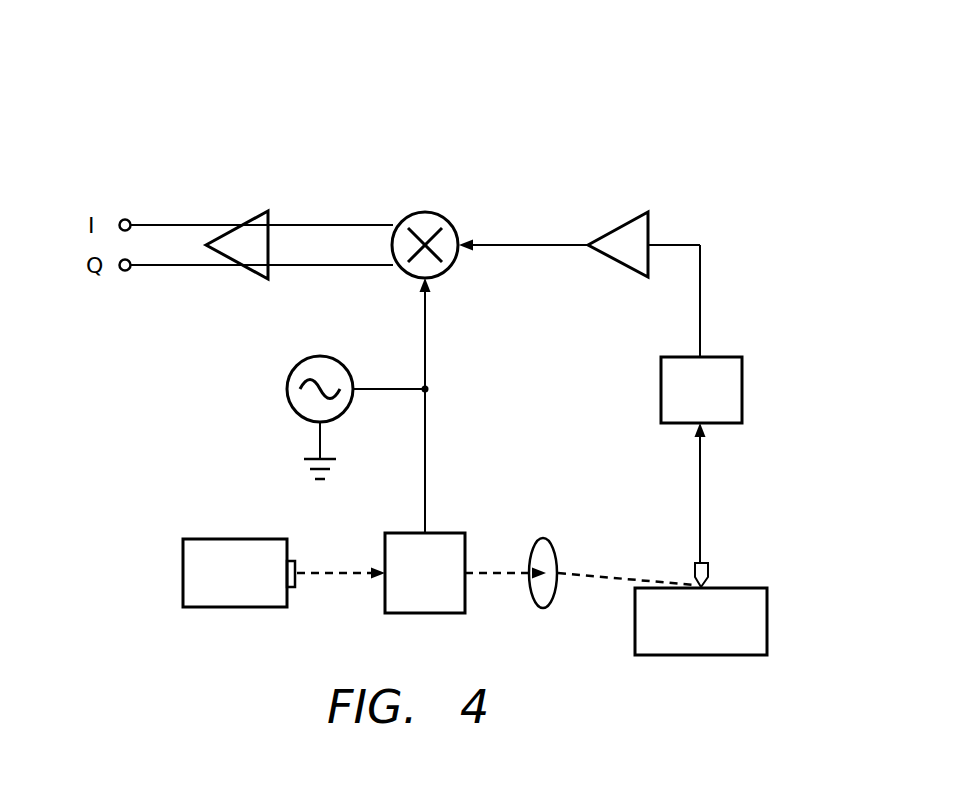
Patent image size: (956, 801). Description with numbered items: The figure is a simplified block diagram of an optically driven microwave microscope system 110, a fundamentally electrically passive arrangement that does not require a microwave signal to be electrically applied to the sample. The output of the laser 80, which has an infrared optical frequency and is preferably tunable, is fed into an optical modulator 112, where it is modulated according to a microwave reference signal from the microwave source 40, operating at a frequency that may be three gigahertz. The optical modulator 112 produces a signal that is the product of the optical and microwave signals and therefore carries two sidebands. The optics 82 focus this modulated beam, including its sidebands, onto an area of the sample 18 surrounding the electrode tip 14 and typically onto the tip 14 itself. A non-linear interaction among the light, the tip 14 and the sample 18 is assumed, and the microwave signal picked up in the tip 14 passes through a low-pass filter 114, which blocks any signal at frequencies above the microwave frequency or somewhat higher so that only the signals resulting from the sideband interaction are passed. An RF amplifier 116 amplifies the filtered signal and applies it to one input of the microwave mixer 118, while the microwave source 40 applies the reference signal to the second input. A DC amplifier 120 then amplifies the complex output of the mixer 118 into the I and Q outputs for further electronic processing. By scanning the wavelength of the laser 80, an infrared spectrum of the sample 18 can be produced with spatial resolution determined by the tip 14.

The optically driven microwave microscope system 110 is at (732, 193).
The DC amplifier 120 is at (261, 222).
The microwave mixer 118 is at (430, 220).
The RF amplifier 116 is at (619, 237).
The low-pass filter 114 is at (727, 362).
The microwave source 40 is at (302, 371).
The laser 80 is at (216, 548).
The optical modulator 112 is at (449, 538).
The optics 82 is at (541, 548).
The tip 14 is at (695, 578).
The sample 18 is at (755, 598).